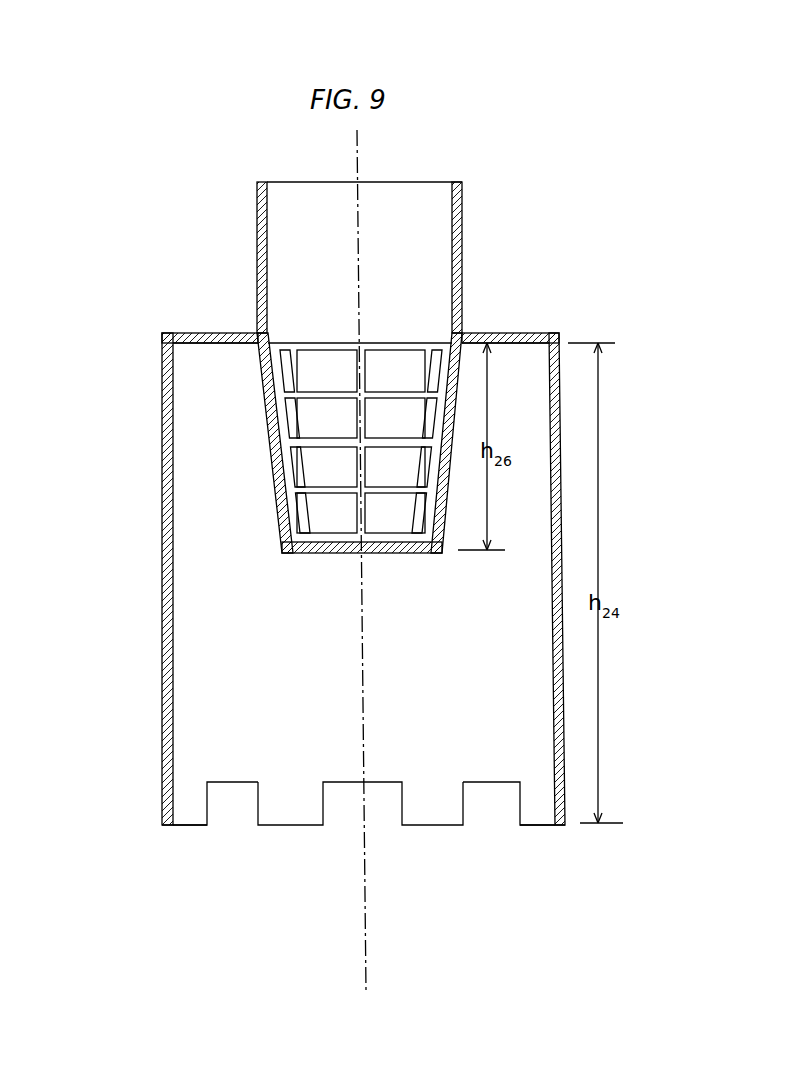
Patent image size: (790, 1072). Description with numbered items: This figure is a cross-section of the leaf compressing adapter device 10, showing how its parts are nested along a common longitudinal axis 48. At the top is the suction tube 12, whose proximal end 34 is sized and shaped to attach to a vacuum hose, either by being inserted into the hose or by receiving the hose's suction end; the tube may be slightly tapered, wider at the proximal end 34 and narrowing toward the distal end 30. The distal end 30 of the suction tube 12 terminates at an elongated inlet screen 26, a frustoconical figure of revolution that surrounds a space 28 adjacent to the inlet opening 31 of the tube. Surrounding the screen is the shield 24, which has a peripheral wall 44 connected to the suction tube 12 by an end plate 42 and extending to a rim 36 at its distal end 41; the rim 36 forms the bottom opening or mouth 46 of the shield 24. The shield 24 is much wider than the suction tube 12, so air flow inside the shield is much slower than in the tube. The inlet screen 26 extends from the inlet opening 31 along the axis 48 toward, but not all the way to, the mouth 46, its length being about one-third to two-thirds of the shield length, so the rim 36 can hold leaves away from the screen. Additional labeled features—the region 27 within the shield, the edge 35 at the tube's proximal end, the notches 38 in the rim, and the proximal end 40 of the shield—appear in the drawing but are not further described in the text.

The compressing adapter device 10 is at (141, 313).
The suction tube 12 is at (257, 228).
The shield 24 is at (163, 570).
The inlet screen 26 is at (267, 412).
The interior chamber 27 is at (372, 663).
The space 28 is at (350, 433).
The distal end 30 is at (270, 345).
The inlet opening 31 is at (466, 347).
The proximal end 34 is at (257, 184).
The cup rim corner 35 is at (450, 190).
The rim 36 is at (186, 826).
The recesses 38 is at (352, 785).
The top flange 40 is at (162, 345).
The distal end 41 is at (165, 823).
The end plate 42 is at (527, 333).
The peripheral wall 44 is at (163, 672).
The mouth 46 is at (548, 826).
The longitudinal axis 48 is at (362, 562).